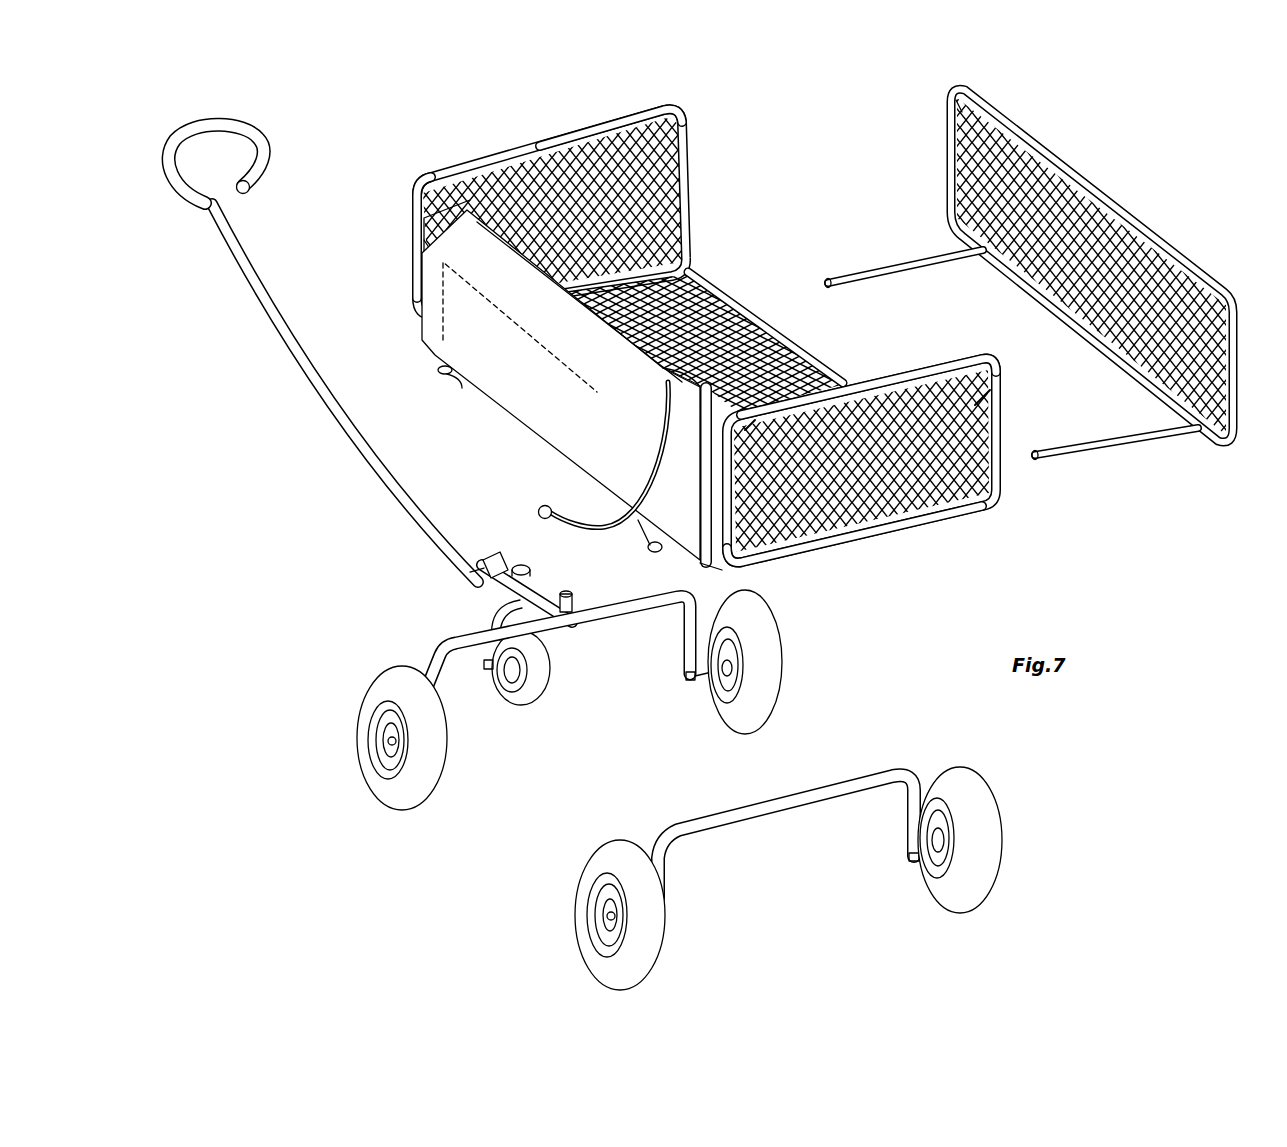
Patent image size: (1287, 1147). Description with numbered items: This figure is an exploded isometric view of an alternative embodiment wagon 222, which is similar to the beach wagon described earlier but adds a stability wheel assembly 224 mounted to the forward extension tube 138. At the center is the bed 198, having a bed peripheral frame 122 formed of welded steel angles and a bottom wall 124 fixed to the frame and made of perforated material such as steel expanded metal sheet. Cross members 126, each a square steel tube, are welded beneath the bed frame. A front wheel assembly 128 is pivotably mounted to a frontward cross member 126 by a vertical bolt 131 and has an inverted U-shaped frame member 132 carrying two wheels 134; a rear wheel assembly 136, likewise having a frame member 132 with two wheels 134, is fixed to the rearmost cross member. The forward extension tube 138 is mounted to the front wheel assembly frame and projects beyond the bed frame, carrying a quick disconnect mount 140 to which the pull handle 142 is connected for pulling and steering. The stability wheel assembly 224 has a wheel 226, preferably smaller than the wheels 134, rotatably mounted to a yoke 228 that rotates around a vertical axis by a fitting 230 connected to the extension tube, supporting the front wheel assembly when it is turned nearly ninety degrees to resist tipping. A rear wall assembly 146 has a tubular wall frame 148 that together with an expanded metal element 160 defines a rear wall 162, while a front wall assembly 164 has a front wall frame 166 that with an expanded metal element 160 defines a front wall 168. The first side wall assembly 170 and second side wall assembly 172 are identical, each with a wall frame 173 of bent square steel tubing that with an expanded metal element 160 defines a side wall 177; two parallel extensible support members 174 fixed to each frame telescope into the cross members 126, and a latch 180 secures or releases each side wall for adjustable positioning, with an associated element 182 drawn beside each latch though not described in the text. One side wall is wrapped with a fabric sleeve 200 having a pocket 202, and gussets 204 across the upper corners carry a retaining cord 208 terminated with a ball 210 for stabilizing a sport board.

The bed peripheral frame 122 is at (833, 368).
The bottom wall 124 is at (727, 290).
The cross member 126 is at (766, 334).
The front wheel assembly 128 is at (357, 727).
The vertical bolt 131 is at (568, 594).
The frame member 132 is at (610, 630).
The wheel 134 is at (378, 782).
The rear wheel assembly 136 is at (577, 903).
The forward extension tube 138 is at (493, 585).
The quick disconnect mount 140 is at (498, 557).
The pull handle 142 is at (267, 287).
The rear wall assembly 146 is at (892, 370).
The tubular wall frame 148 is at (1004, 386).
The expanded metal element 160 is at (690, 186).
The rear wall 162 is at (868, 550).
The front wall assembly 164 is at (527, 135).
The front wall frame 166 is at (445, 160).
The front wall 168 is at (577, 128).
The first side wall assembly 170 is at (508, 418).
The second side wall assembly 172 is at (1060, 147).
The wall frame 173 is at (940, 153).
The extensible support member 174 is at (900, 261).
The side wall 177 is at (1125, 197).
The latch 180 is at (443, 370).
The strap 182 is at (460, 387).
The bed 198 is at (706, 278).
The fabric sleeve 200 is at (553, 453).
The pocket 202 is at (483, 293).
The gusset 204 is at (992, 405).
The retaining cord 208 is at (603, 512).
The ball 210 is at (538, 505).
The wagon 222 is at (789, 174).
The stability wheel assembly 224 is at (560, 704).
The wheel 226 is at (528, 703).
The yoke 228 is at (492, 622).
The fitting 230 is at (522, 568).